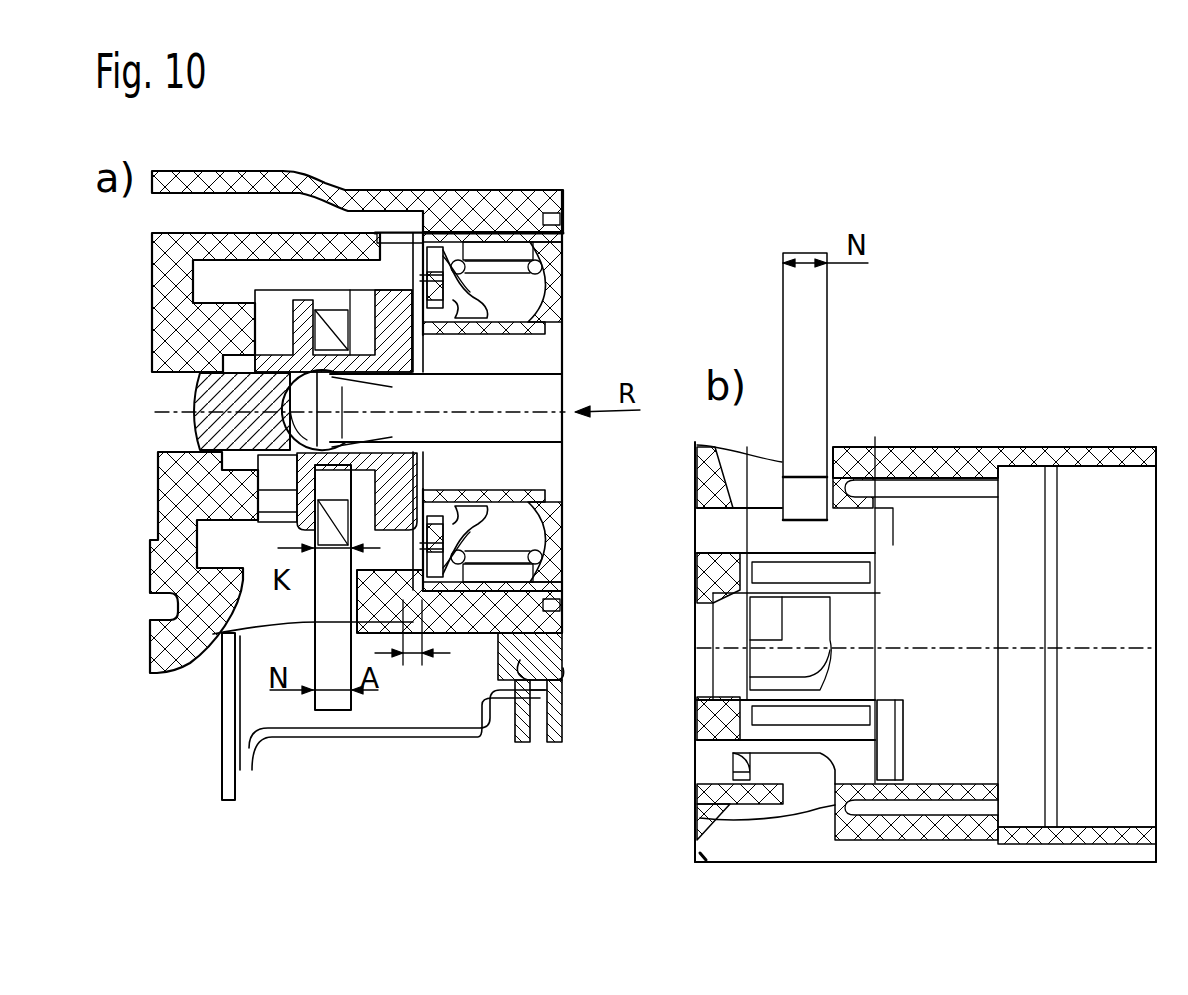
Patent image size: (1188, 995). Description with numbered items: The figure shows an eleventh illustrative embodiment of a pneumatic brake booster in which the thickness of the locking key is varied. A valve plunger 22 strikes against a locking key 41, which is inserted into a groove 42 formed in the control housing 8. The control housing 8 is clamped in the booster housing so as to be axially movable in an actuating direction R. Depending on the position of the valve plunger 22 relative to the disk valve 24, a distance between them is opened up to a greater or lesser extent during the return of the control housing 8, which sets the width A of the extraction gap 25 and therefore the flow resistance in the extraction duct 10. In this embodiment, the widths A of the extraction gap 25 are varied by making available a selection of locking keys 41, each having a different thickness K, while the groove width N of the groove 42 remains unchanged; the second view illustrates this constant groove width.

The control housing 8 is at (497, 190).
The extraction duct 10 is at (362, 214).
The valve plunger 22 is at (198, 416).
The disk valve 24 is at (480, 500).
The extraction gap 25 is at (448, 634).
The locking key 41 is at (290, 527).
The groove 42 is at (345, 707).